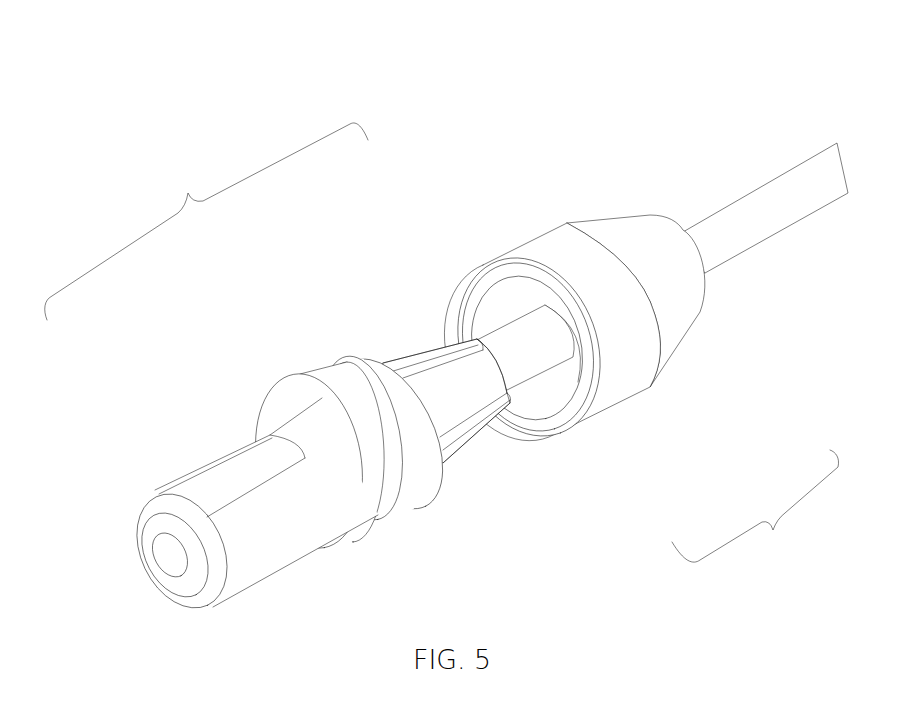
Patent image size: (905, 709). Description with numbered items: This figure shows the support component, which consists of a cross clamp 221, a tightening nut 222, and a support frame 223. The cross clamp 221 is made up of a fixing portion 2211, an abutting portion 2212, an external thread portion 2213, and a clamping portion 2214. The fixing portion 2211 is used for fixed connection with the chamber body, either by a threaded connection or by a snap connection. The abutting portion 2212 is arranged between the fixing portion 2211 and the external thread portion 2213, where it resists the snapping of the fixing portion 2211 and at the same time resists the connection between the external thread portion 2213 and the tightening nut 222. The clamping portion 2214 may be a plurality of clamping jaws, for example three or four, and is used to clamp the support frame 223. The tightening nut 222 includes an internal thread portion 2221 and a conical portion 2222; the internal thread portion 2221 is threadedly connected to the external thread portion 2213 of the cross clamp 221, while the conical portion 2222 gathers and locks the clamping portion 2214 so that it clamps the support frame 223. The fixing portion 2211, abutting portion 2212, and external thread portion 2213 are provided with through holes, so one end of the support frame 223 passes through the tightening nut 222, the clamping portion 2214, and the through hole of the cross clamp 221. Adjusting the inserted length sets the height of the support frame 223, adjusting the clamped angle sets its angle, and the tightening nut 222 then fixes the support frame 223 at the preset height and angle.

The cross clamp 221 is at (206, 221).
The fixing portion 2211 is at (205, 483).
The abutting portion 2212 is at (322, 387).
The external thread portion 2213 is at (377, 387).
The clamping portion 2214 is at (453, 370).
The tightening nut 222 is at (755, 510).
The internal thread portion 2221 is at (628, 375).
The conical portion 2222 is at (684, 312).
The support frame 223 is at (785, 202).